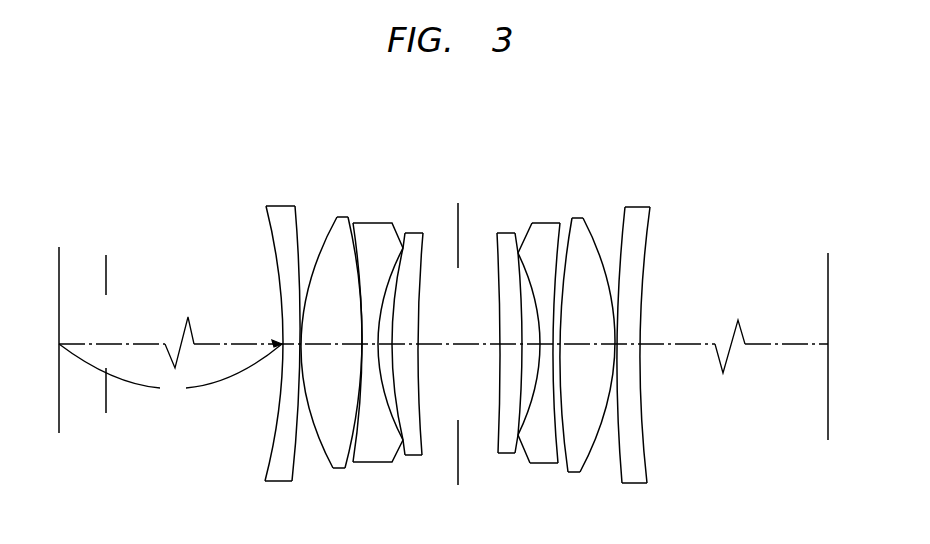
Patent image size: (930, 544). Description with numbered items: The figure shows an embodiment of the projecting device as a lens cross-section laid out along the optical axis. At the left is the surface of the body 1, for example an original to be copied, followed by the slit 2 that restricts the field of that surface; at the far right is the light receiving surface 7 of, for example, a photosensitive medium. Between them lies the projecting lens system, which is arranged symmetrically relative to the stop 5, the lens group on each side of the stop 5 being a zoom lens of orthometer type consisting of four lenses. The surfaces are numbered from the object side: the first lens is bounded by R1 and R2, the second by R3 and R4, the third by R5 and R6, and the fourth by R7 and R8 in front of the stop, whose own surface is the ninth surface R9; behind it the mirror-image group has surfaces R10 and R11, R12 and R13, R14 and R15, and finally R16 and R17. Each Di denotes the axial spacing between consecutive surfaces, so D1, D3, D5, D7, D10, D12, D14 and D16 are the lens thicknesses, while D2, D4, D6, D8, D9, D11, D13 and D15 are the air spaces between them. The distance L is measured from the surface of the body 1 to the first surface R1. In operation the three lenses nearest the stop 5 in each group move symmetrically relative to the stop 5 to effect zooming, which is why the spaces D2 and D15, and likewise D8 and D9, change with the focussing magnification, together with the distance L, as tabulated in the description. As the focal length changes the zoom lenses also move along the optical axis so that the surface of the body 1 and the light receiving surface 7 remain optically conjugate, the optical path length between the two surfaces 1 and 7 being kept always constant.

The surface of a body 1 is at (60, 262).
The slit 2 is at (107, 265).
The stop 5 is at (458, 236).
The light receiving surface 7 is at (828, 265).
The distance between the surface of the body and the R1 surface L is at (170, 368).
The radius of curvature of the first surface R1 is at (278, 207).
The radius of curvature of the second surface R2 is at (297, 206).
The radius of curvature of the third surface R3 is at (331, 232).
The radius of curvature of the fourth surface R4 is at (352, 232).
The radius of curvature of the fifth surface R5 is at (368, 222).
The radius of curvature of the sixth surface R6 is at (403, 248).
The radius of curvature of the seventh surface R7 is at (420, 236).
The radius of curvature of the eighth surface R8 is at (430, 243).
The ninth surface (stop) R9 is at (459, 326).
The radius of curvature of the tenth surface R10 is at (496, 236).
The radius of curvature of the eleventh surface R11 is at (518, 253).
The radius of curvature of the twelfth surface R12 is at (535, 224).
The radius of curvature of the thirteenth surface R13 is at (557, 228).
The radius of curvature of the fourteenth surface R14 is at (573, 218).
The radius of curvature of the fifteenth surface R15 is at (588, 232).
The radius of curvature of the sixteenth surface R16 is at (628, 214).
The radius of curvature of the seventeenth surface R17 is at (650, 218).
The air space between the first and second surfaces D1 is at (283, 360).
The air space between the second and third surfaces D2 is at (301, 350).
The air space between the third and fourth surfaces D3 is at (329, 349).
The air space between the fourth and fifth surfaces D4 is at (362, 350).
The air space between the fifth and sixth surfaces D5 is at (369, 352).
The air space between the sixth and seventh surfaces D6 is at (386, 350).
The air space between the seventh and eighth surfaces D7 is at (404, 350).
The air space between the eighth and ninth surfaces D8 is at (440, 348).
The air space between the ninth and tenth surfaces D9 is at (479, 348).
The air space between the tenth and eleventh surfaces D10 is at (511, 350).
The air space between the eleventh and twelfth surfaces D11 is at (531, 350).
The air space between the twelfth and thirteenth surfaces D12 is at (546, 350).
The air space between the thirteenth and fourteenth surfaces D13 is at (557, 350).
The air space between the fourteenth and fifteenth surfaces D14 is at (586, 348).
The air space between the fifteenth and sixteenth surfaces D15 is at (616, 350).
The air space between the sixteenth and seventeenth surfaces D16 is at (627, 350).